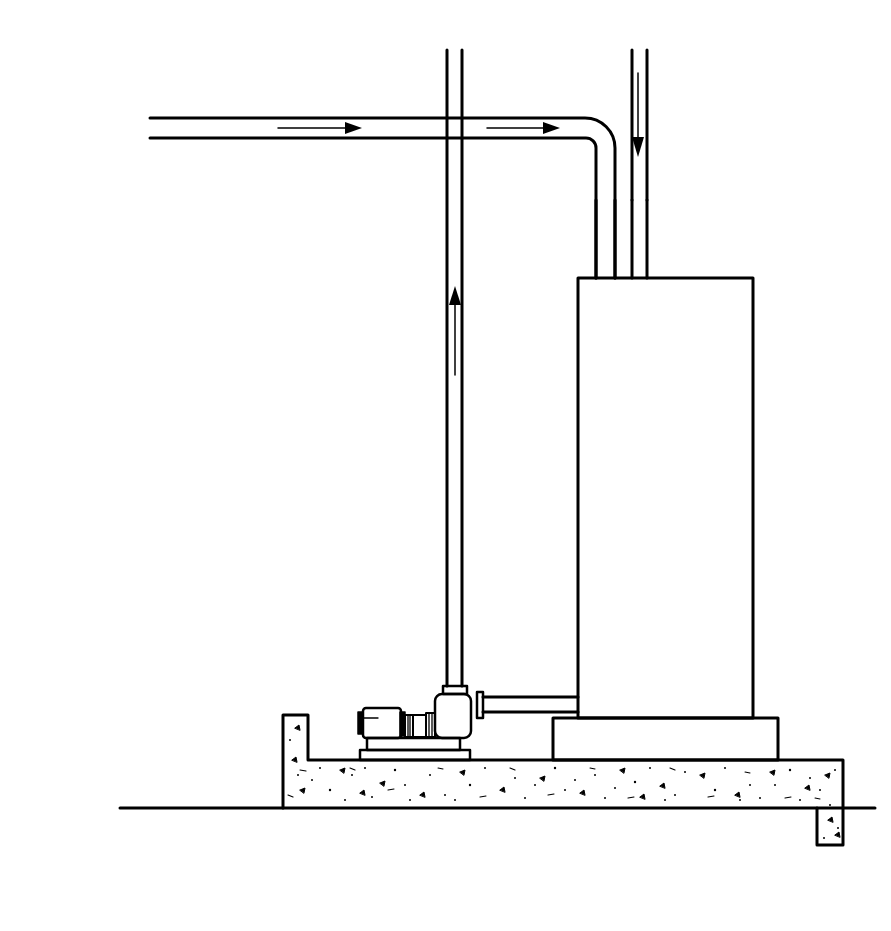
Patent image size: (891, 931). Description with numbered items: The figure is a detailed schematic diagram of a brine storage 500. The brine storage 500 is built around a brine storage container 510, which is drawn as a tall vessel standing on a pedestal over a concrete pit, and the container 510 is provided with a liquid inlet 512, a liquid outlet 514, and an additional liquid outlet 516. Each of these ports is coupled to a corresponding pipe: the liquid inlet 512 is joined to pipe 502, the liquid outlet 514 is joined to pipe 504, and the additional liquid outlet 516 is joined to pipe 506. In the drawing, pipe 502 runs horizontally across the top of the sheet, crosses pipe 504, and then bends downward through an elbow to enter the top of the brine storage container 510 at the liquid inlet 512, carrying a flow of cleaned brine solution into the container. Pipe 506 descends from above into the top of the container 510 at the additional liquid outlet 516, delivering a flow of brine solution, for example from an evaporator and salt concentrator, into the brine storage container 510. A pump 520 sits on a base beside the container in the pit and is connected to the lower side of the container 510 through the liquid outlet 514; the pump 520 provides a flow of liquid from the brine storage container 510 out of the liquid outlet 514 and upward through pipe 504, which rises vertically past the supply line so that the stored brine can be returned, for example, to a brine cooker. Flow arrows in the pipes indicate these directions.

The brine storage 500 is at (211, 75).
The pipe 502 is at (318, 118).
The pipe 504 is at (447, 394).
The pipe 506 is at (648, 94).
The brine storage container 510 is at (755, 414).
The liquid inlet 512 is at (605, 278).
The liquid outlet 514 is at (578, 702).
The additional liquid outlet 516 is at (639, 278).
The pump 520 is at (358, 717).